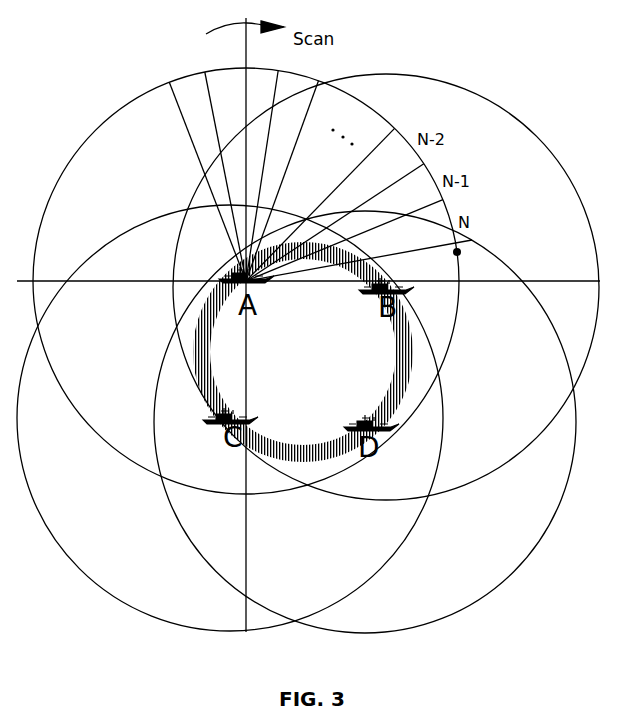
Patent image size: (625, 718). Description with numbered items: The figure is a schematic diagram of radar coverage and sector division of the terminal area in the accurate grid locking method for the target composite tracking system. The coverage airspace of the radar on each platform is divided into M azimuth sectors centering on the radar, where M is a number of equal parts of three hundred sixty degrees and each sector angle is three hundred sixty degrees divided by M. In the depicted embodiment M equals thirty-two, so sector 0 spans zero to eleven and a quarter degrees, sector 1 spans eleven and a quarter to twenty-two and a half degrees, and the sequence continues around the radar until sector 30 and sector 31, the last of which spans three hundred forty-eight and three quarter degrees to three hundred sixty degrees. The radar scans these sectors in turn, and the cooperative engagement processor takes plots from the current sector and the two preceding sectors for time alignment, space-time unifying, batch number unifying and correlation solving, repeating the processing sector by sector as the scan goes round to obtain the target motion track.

The sector 30 is at (207, 168).
The sector 31 is at (225, 164).
The sector 0 is at (262, 164).
The sector 1 is at (282, 168).